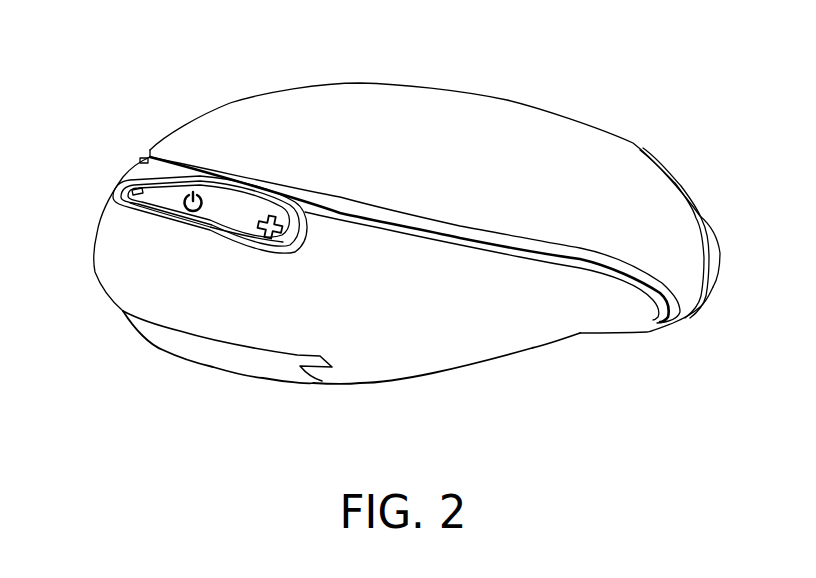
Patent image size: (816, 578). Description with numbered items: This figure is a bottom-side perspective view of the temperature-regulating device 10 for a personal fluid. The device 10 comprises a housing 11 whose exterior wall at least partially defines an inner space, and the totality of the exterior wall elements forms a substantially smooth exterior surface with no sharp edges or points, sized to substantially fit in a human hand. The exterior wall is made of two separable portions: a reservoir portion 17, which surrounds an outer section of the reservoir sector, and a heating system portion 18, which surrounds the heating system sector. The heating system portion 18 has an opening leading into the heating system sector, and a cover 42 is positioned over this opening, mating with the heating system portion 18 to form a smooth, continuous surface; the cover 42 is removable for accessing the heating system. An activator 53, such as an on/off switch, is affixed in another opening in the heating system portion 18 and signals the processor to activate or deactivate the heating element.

The temperature-regulating device 10 is at (394, 233).
The housing 11 is at (532, 348).
The reservoir portion 17 is at (384, 152).
The heating system portion 18 is at (437, 312).
The cover 42 is at (180, 342).
The activator 53 is at (158, 188).